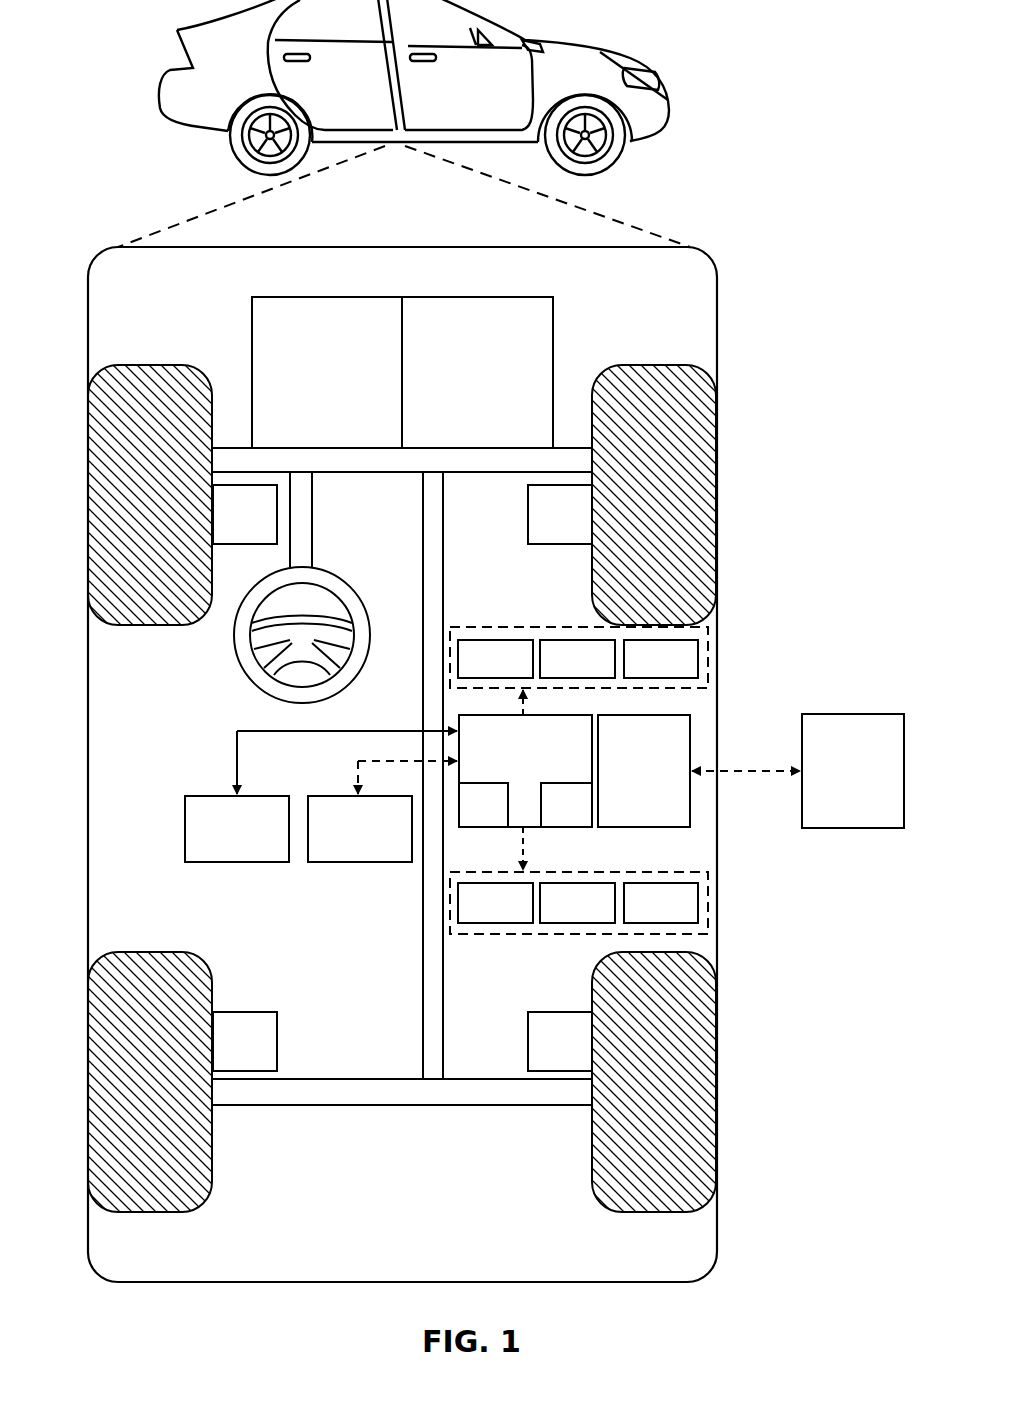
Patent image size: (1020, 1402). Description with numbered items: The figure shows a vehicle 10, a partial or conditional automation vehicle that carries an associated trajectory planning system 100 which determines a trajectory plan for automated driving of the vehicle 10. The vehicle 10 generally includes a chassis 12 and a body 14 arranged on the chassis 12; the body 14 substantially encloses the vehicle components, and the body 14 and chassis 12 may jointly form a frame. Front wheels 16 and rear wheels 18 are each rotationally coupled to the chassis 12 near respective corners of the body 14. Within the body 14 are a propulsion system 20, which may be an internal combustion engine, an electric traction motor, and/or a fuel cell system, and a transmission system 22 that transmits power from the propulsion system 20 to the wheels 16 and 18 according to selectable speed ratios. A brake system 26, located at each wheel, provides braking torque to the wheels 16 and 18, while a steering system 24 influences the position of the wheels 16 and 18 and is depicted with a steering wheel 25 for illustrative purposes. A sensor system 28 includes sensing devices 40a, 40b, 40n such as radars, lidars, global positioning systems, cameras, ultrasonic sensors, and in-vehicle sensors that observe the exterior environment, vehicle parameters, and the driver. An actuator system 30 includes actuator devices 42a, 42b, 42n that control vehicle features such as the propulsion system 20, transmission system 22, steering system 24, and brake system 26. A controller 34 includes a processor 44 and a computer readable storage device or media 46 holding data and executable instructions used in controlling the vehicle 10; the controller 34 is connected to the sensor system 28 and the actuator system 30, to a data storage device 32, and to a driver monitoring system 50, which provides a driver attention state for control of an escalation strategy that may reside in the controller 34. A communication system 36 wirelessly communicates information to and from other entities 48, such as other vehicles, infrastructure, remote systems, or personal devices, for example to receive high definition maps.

The vehicle 10 is at (168, 62).
The trajectory planning system 100 is at (740, 264).
The chassis 12 is at (423, 1008).
The body 14 is at (88, 726).
The front wheels 16 is at (150, 365).
The rear wheels 18 is at (150, 1212).
The propulsion system 20 is at (312, 386).
The transmission system 22 is at (463, 386).
The steering system 24 is at (323, 543).
The steering wheel 25 is at (265, 676).
The brake system 26 is at (230, 530).
The sensor system 28 is at (538, 627).
The actuator system 30 is at (545, 934).
The data storage device 32 is at (345, 844).
The controller 34 is at (510, 766).
The communication system 36 is at (629, 784).
The sensing device 40a is at (473, 674).
The sensing device 40b is at (555, 674).
The sensing device 40n is at (639, 674).
The actuator device 42a is at (473, 918).
The actuator device 42b is at (555, 918).
The actuator device 42n is at (639, 918).
The processor 44 is at (468, 817).
The computer readable storage device or media 46 is at (551, 817).
The other entities 48 is at (838, 784).
The driver monitoring system 50 is at (222, 844).